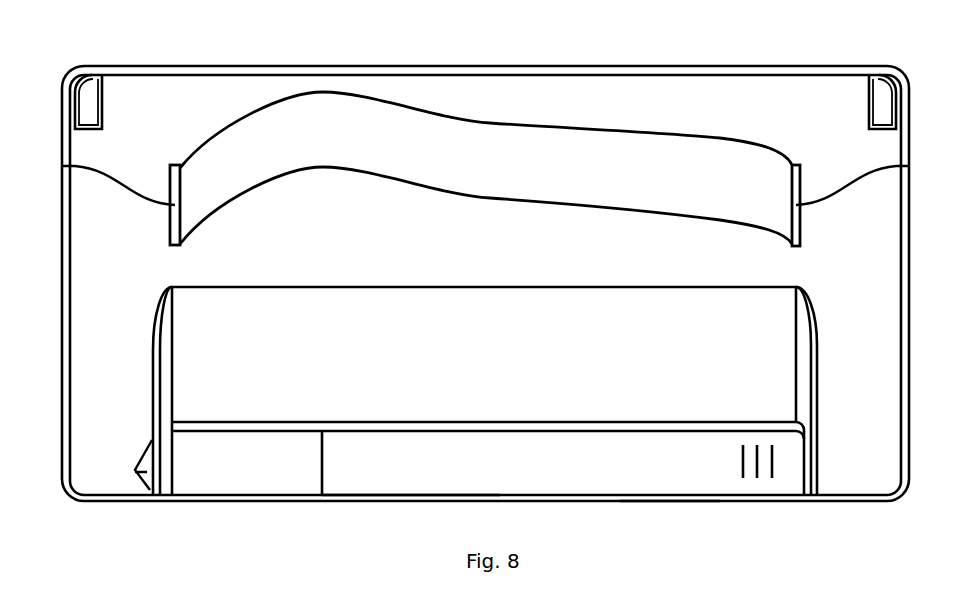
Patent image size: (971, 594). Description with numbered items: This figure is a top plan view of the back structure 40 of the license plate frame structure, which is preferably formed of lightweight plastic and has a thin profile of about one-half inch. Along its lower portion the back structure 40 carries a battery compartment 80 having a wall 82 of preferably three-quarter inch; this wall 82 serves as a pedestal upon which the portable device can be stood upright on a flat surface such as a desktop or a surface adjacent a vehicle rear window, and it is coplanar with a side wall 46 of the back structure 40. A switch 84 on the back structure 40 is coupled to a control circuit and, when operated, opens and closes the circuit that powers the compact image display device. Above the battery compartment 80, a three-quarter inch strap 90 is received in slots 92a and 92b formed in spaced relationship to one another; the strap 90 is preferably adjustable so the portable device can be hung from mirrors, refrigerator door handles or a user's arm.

The back structure 40 is at (485, 283).
The side wall 46 is at (665, 502).
The battery compartment 80 is at (497, 465).
The wall 82 is at (412, 498).
The switch 84 is at (136, 470).
The strap 90 is at (262, 149).
The slot 92a is at (62, 166).
The slot 92b is at (909, 166).